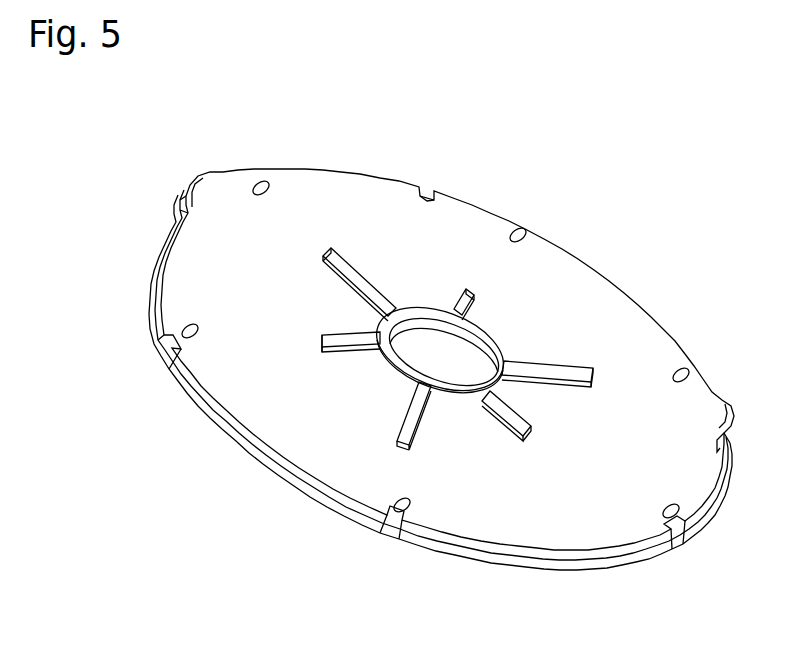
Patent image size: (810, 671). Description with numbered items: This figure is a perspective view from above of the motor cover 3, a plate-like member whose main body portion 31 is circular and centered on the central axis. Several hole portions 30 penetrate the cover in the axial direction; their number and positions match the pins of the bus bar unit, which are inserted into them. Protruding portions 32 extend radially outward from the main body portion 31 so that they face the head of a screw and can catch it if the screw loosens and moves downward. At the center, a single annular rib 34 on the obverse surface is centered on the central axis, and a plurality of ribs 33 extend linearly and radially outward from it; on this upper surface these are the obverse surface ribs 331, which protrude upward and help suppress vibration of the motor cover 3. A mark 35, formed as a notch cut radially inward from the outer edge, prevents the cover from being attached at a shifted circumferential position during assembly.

The motor cover 3 is at (612, 258).
The hole portion 30 is at (265, 185).
The main body portion 31 is at (257, 281).
The protruding portion 32 is at (210, 180).
The rib 33 is at (533, 360).
The obverse surface rib 331 is at (350, 257).
The annular rib 34 is at (463, 400).
The mark 35 is at (434, 199).